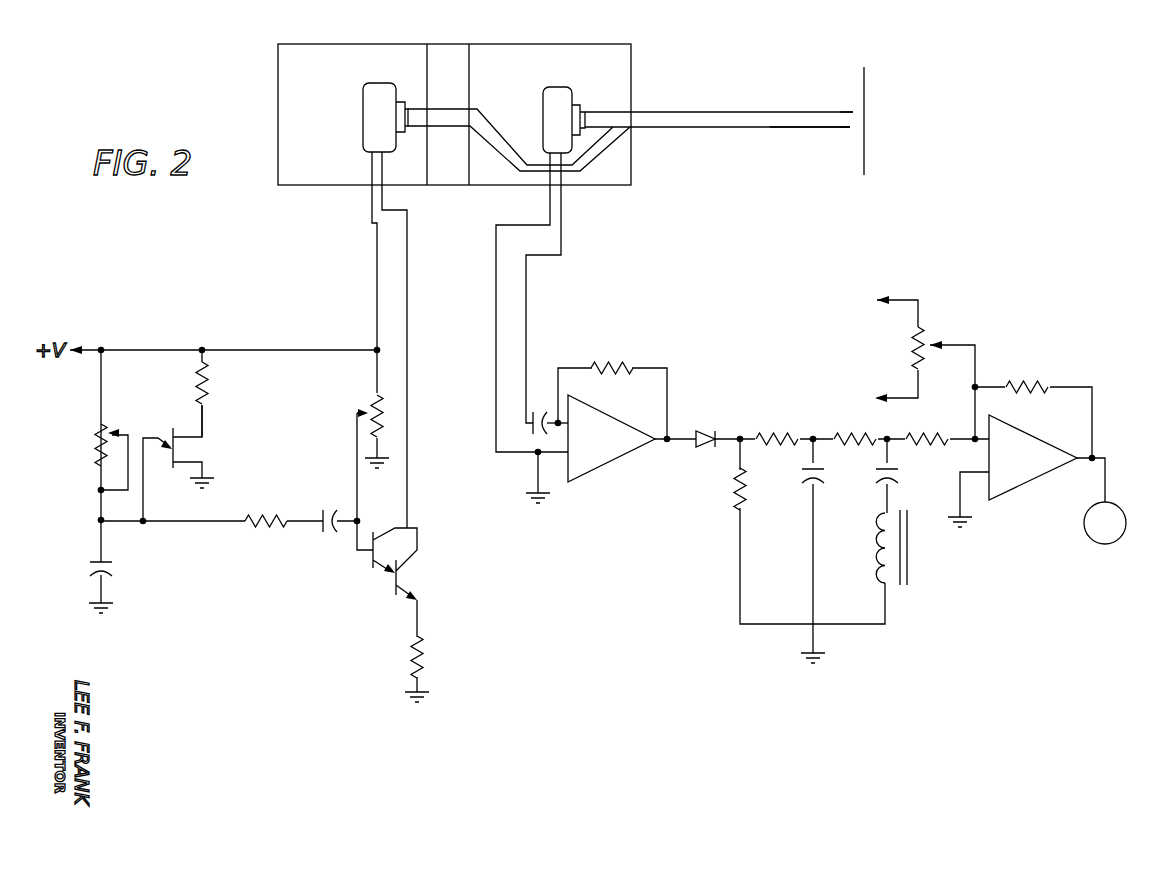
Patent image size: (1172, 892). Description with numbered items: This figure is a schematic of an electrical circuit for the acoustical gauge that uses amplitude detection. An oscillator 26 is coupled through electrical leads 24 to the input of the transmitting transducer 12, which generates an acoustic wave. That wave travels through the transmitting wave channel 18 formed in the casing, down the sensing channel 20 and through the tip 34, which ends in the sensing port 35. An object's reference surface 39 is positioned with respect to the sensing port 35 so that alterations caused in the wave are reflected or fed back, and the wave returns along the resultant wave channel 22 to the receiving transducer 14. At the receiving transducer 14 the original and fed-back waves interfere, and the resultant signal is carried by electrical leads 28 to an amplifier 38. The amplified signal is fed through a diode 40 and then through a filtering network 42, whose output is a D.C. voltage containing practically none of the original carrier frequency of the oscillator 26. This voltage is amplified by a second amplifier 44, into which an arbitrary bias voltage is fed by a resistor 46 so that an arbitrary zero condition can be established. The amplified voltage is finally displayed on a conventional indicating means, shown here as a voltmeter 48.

The transmitting transducer 12 is at (377, 90).
The receiving transducer 14 is at (562, 97).
The transmitting wave channel 18 is at (463, 117).
The sensing channel 20 is at (733, 125).
The resultant wave channel 22 is at (598, 118).
The electrical leads 24 is at (377, 258).
The oscillator 26 is at (208, 340).
The electrical leads 28 is at (495, 305).
The tip 34 is at (797, 127).
The sensing port 35 is at (856, 125).
The amplifier 38 is at (603, 463).
The reference surface 39 is at (865, 82).
The diode 40 is at (698, 447).
The filtering network 42 is at (817, 432).
The amplifier 44 is at (1030, 482).
The resistor 46 is at (922, 325).
The voltmeter 48 is at (1123, 510).